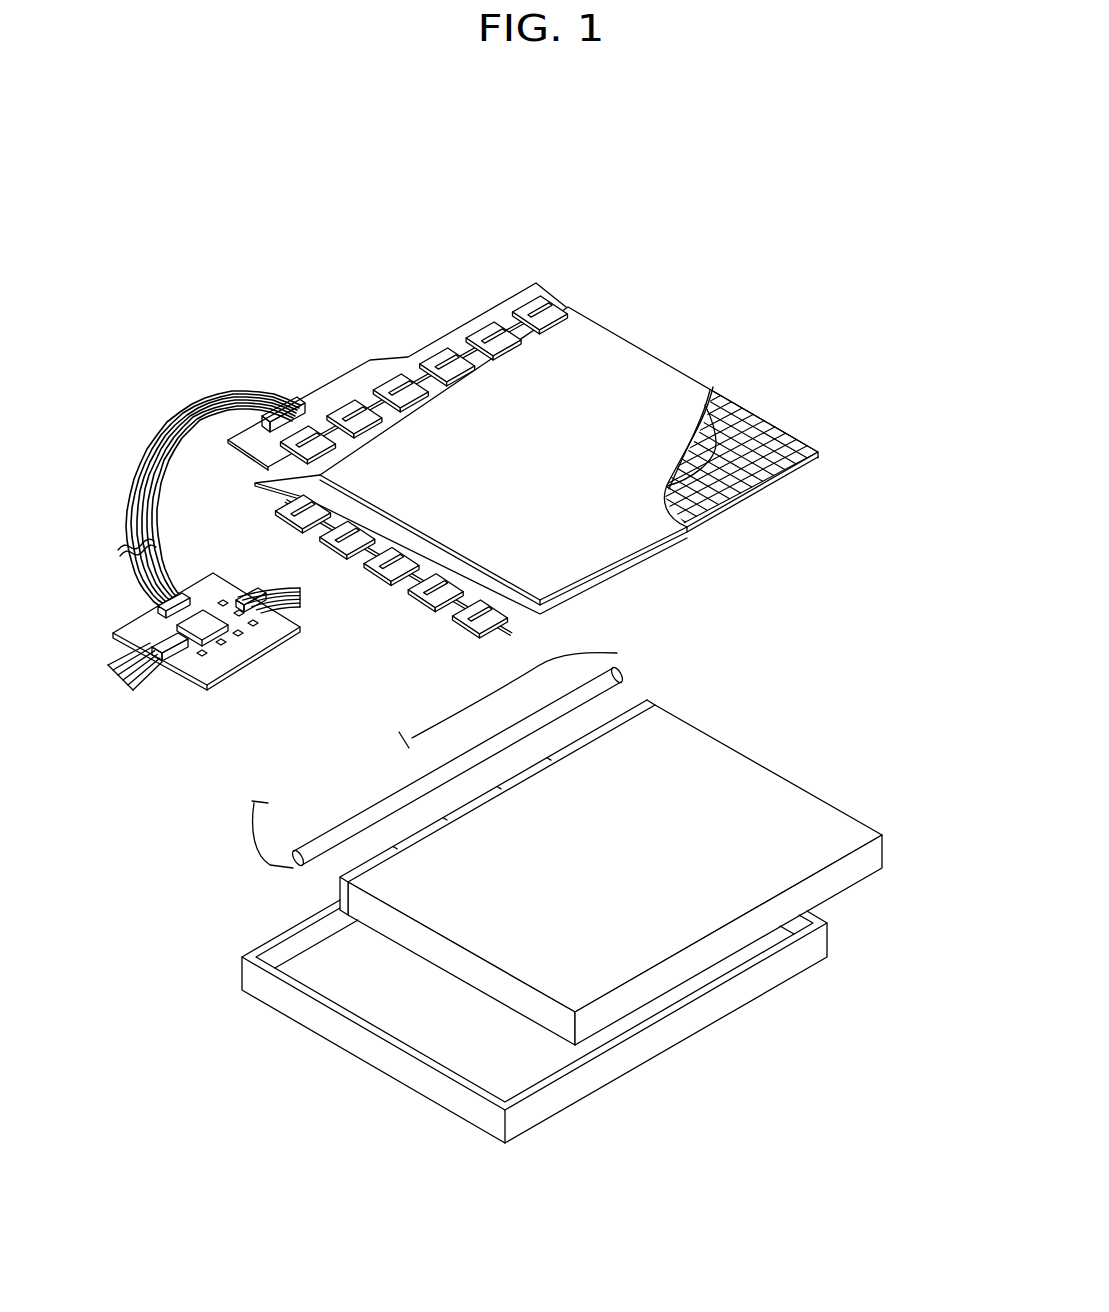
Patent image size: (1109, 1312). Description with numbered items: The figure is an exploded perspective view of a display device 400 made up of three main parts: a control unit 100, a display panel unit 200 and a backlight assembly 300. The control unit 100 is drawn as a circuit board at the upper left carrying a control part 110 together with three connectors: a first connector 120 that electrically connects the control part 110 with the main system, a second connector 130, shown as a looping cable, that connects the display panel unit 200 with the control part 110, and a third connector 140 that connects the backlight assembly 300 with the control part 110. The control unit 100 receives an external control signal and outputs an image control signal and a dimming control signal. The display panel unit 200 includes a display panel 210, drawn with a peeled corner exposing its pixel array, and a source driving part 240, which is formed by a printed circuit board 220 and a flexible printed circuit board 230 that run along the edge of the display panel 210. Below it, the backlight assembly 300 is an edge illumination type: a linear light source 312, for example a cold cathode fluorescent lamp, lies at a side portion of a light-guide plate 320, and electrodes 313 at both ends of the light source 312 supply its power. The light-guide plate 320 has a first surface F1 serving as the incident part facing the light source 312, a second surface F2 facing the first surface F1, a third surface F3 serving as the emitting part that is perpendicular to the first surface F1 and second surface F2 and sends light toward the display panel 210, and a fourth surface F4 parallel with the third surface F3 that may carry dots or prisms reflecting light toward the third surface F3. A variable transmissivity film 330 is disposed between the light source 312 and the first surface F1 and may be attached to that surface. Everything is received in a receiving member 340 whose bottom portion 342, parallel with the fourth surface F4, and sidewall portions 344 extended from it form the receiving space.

The display device 400 is at (360, 274).
The control unit 100 is at (208, 560).
The control part 110 is at (205, 612).
The first connector 120 is at (150, 687).
The second connector 130 is at (187, 412).
The third connector 140 is at (300, 598).
The display panel unit 200 is at (655, 193).
The display panel 210 is at (700, 443).
The printed circuit board 220 is at (519, 287).
The flexible printed circuit board 230 is at (541, 297).
The source driving part 240 is at (505, 224).
The backlight assembly 300 is at (883, 636).
The light source 312 is at (623, 673).
The electrodes 313 is at (617, 653).
The light-guide plate 320 is at (248, 1058).
The variable transmissivity film 330 is at (337, 890).
The receiving member 340 is at (668, 1104).
The bottom portion 342 is at (521, 1071).
The sidewall portions 344 is at (537, 1103).
The first surface F1 is at (337, 912).
The second surface F2 is at (583, 1029).
The third surface F3 is at (498, 928).
The fourth surface F4 is at (400, 947).